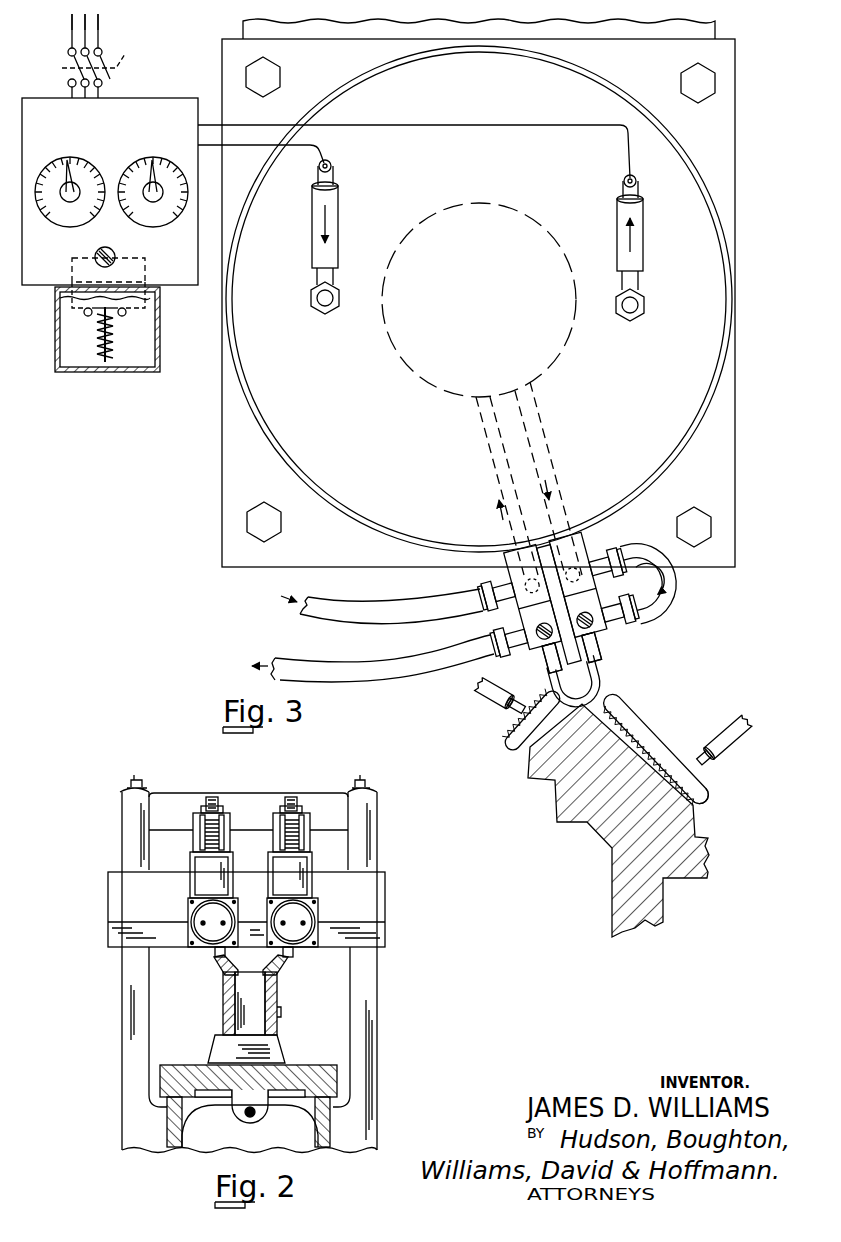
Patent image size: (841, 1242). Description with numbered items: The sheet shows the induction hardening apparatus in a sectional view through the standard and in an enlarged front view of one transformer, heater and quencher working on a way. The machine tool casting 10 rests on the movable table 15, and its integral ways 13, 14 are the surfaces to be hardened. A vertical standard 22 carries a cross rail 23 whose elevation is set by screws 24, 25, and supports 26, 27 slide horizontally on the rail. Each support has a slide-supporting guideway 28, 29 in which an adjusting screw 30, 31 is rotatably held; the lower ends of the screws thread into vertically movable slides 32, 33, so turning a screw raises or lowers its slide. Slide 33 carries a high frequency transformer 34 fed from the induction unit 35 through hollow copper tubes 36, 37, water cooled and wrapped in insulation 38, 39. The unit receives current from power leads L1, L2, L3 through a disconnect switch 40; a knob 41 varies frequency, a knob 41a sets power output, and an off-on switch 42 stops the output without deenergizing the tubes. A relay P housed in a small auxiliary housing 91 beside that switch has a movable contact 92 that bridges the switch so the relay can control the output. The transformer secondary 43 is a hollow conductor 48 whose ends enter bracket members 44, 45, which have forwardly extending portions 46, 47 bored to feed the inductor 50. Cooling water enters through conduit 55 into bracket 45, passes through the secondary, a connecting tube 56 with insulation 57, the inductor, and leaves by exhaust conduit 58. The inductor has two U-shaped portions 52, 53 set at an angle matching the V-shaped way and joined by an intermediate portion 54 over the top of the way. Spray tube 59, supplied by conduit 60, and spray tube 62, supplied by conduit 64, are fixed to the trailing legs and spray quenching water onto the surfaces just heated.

In FIG. 2, the machine tool casting 10 is at (285, 1030).
In FIG. 2, the way 13 is at (284, 968).
In FIG. 3, the way 14 is at (565, 796).
In FIG. 2, the way 14 is at (216, 968).
In FIG. 2, the movable table 15 is at (183, 1070).
In FIG. 2, the vertical standard 22 is at (367, 1022).
In FIG. 2, the cross rail 23 is at (385, 902).
In FIG. 2, the screw 24 is at (360, 775).
In FIG. 2, the screw 25 is at (148, 764).
In FIG. 2, the support 26 is at (318, 870).
In FIG. 2, the support 27 is at (189, 860).
In FIG. 2, the slide-supporting guideway 28 is at (307, 828).
In FIG. 2, the slide-supporting guideway 29 is at (193, 820).
In FIG. 2, the adjusting screw 30 is at (291, 797).
In FIG. 2, the adjusting screw 31 is at (222, 789).
In FIG. 2, the vertically movable slide 32 is at (305, 891).
In FIG. 3, the vertically movable slide 33 is at (705, 34).
In FIG. 2, the vertically movable slide 33 is at (206, 886).
In FIG. 3, the high frequency alternating current transformer 34 is at (244, 392).
In FIG. 2, the high frequency alternating current transformer 34 is at (186, 914).
In FIG. 3, the induction unit 35 is at (165, 96).
In FIG. 3, the hollow copper tube 36 is at (641, 186).
In FIG. 3, the hollow copper tube 37 is at (336, 176).
In FIG. 3, the insulation 38 is at (643, 250).
In FIG. 3, the insulation 39 is at (338, 243).
In FIG. 3, the disconnect switch 40 is at (62, 70).
In FIG. 3, the knob 41 is at (74, 160).
In FIG. 3, the knob 41a is at (163, 139).
In FIG. 3, the off-on switch 42 is at (108, 246).
In FIG. 3, the secondary of the transformer 43 is at (465, 370).
In FIG. 3, the bracket member 44 is at (589, 541).
In FIG. 3, the bracket member 45 is at (503, 573).
In FIG. 3, the forwardly extending portion 46 is at (597, 631).
In FIG. 3, the forwardly extending portion 47 is at (530, 657).
In FIG. 3, the hollow conductor 48 is at (561, 520).
In FIG. 3, the induction heater or inductor 50 is at (602, 662).
In FIG. 2, the induction heater or inductor 50 is at (210, 955).
In FIG. 3, the U-shaped portion 52 is at (715, 795).
In FIG. 3, the U-shaped portion 53 is at (509, 747).
In FIG. 3, the intermediate portion 54 is at (575, 683).
In FIG. 3, the conduit 55 is at (398, 609).
In FIG. 3, the connecting tube 56 is at (600, 585).
In FIG. 3, the insulation 57 is at (672, 590).
In FIG. 3, the exhaust conduit 58 is at (439, 657).
In FIG. 3, the spray tube 59 is at (668, 740).
In FIG. 3, the supply conduit 60 is at (714, 738).
In FIG. 3, the spray tube 62 is at (534, 690).
In FIG. 3, the conduit 64 is at (486, 704).
In FIG. 3, the auxiliary housing 91 is at (55, 347).
In FIG. 3, the movable contact 92 is at (93, 316).
In FIG. 3, the power lead L1 is at (71, 20).
In FIG. 3, the power lead L2 is at (85, 33).
In FIG. 3, the power lead L3 is at (99, 32).
In FIG. 3, the relay P is at (111, 346).